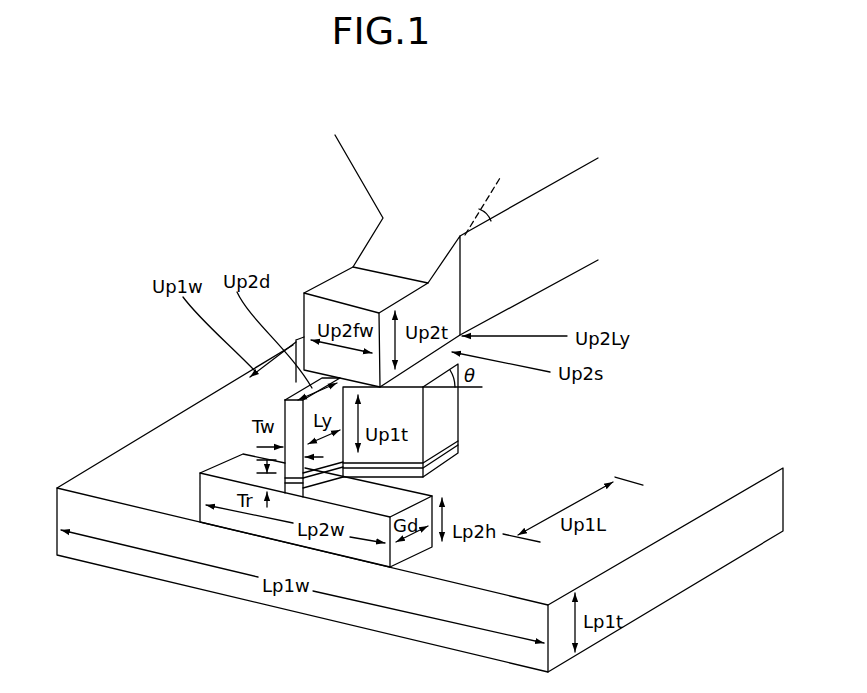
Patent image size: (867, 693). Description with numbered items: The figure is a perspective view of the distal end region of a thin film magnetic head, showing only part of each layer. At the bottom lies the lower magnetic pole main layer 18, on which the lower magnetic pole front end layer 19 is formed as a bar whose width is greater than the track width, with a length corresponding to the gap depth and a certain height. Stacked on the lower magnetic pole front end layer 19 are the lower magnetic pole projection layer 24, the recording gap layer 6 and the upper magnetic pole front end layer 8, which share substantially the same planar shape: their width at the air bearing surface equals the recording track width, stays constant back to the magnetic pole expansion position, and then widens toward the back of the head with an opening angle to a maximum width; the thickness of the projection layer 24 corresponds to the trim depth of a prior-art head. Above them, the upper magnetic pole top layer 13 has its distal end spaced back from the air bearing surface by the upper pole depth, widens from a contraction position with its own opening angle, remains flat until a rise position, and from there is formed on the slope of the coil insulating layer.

The recording gap layer 6 is at (457, 445).
The upper magnetic pole front end layer 8 is at (460, 421).
The upper magnetic pole top layer 13 is at (577, 237).
The lower magnetic pole main layer 18 is at (667, 587).
The lower magnetic pole front end layer 19 is at (357, 543).
The lower magnetic pole projection layer 24 is at (445, 462).